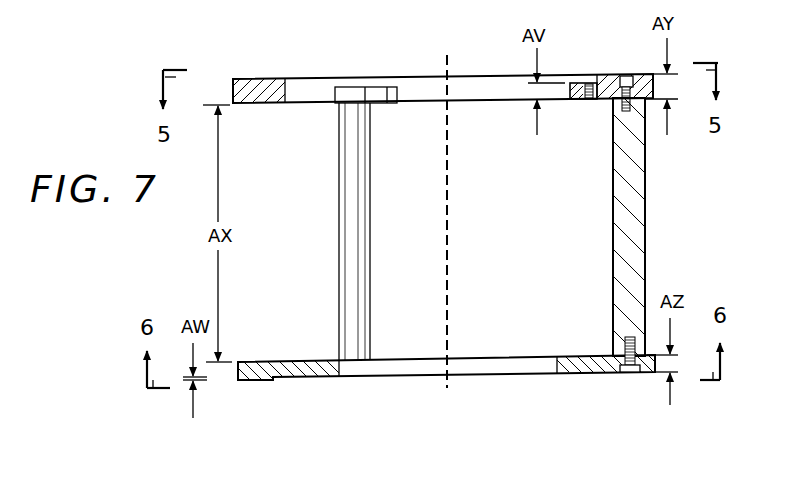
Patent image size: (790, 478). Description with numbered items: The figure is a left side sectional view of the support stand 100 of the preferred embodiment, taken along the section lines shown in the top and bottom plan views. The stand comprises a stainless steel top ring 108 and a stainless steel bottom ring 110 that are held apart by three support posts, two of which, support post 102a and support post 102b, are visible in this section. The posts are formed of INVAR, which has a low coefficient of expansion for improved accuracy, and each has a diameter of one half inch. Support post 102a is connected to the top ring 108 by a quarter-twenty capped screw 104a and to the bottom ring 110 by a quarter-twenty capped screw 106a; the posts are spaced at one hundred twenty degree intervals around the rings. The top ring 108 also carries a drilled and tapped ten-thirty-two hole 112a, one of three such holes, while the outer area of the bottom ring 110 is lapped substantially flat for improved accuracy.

The support stand 100 is at (152, 241).
The support post 102a is at (645, 254).
The support post 102b is at (339, 278).
The capped screw 104a is at (624, 75).
The capped screw 106a is at (627, 372).
The top ring 108 is at (462, 86).
The bottom ring 110 is at (498, 361).
The drilled and tapped hole 112a is at (586, 101).